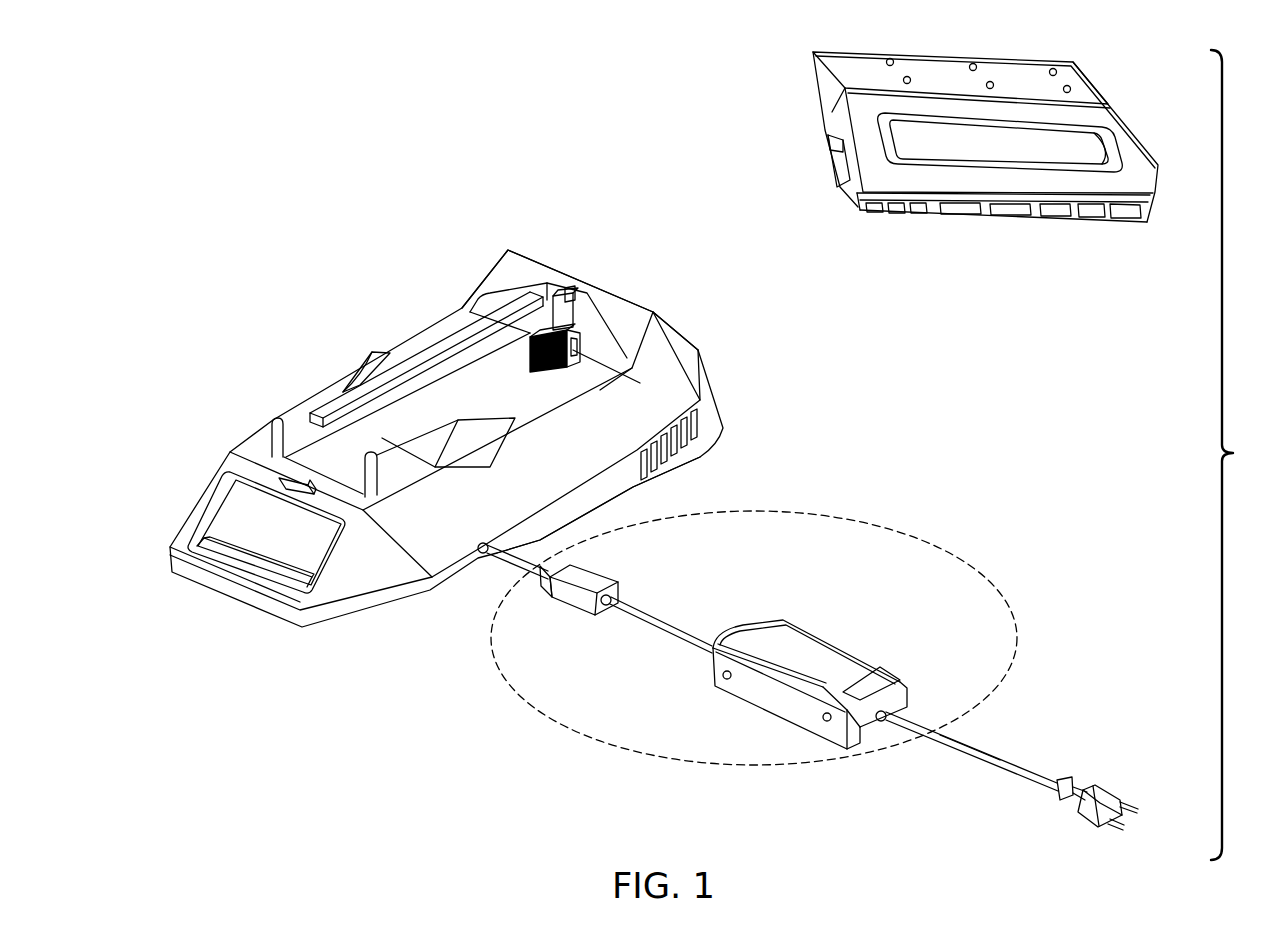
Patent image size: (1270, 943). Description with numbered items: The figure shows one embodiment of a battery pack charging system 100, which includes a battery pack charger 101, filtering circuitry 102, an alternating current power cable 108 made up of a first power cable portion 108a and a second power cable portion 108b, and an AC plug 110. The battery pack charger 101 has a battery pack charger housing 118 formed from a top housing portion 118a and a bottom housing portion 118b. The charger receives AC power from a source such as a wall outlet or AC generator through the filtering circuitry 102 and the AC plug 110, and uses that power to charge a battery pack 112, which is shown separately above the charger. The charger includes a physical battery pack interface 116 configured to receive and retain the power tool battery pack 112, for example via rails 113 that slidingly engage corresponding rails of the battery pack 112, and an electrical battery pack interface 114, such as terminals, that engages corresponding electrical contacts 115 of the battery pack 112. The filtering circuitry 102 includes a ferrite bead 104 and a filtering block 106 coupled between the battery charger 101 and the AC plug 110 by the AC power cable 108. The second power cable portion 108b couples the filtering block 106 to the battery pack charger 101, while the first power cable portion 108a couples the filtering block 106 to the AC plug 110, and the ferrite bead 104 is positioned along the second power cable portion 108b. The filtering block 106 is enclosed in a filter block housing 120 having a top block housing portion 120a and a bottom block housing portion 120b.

The battery pack charging system 100 is at (285, 158).
The battery pack charger 101 is at (366, 665).
The filtering circuitry 102 is at (918, 533).
The ferrite bead 104 is at (600, 582).
The filtering block 106 is at (718, 689).
The AC power cable 108 is at (975, 775).
The first power cable portion 108a is at (970, 747).
The second power cable portion 108b is at (495, 573).
The AC plug 110 is at (1080, 803).
The battery pack 112 is at (1127, 125).
The rails 113 is at (920, 210).
The electrical battery pack interface 114 is at (545, 335).
The electrical contacts 115 is at (838, 148).
The physical battery pack interface 116 is at (352, 390).
The battery pack charger housing 118 is at (700, 400).
The top housing portion 118a is at (655, 313).
The bottom housing portion 118b is at (600, 507).
The filter block housing 120 is at (873, 670).
The top block housing portion 120a is at (807, 635).
The bottom block housing portion 120b is at (797, 717).